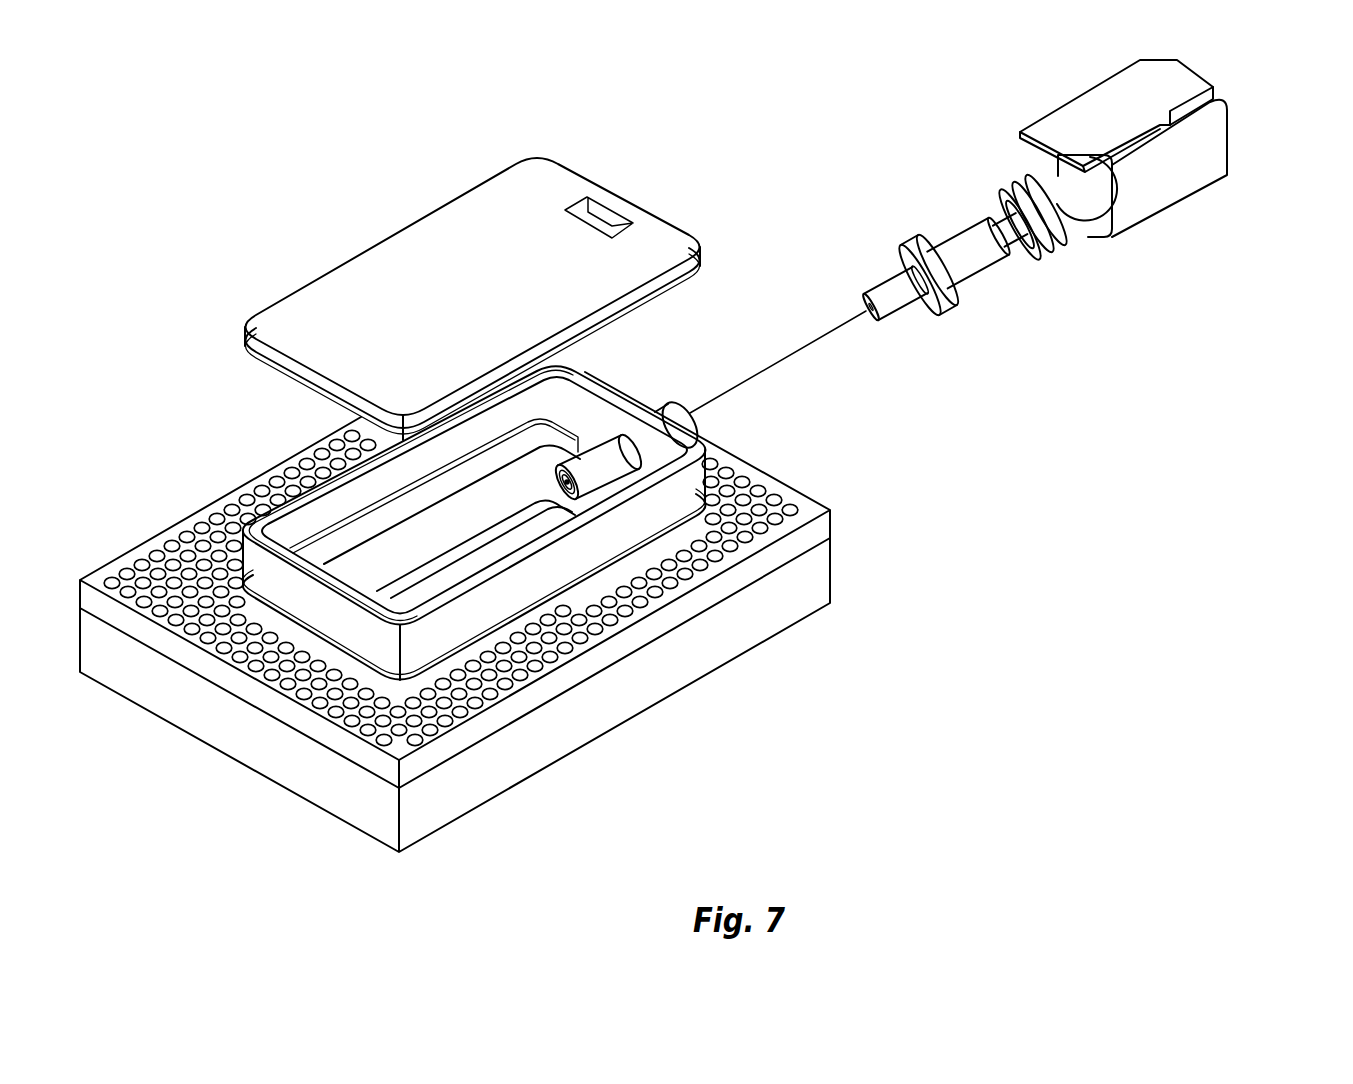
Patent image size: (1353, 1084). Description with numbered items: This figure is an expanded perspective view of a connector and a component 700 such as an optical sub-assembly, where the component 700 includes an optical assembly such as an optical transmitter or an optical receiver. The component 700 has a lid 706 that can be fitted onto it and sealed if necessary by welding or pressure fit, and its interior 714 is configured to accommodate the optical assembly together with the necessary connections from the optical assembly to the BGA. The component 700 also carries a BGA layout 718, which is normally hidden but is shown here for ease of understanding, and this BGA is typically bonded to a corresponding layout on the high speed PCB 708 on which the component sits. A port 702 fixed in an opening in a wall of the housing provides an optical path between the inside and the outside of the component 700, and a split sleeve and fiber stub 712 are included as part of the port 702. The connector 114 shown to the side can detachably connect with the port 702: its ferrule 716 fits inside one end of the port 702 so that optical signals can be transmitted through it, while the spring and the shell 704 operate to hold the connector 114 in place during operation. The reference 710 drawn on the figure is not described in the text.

The component 700 is at (526, 489).
The port 702 is at (690, 392).
The shell 704 is at (1233, 131).
The lid 706 is at (557, 185).
The PCB 708 is at (438, 793).
The septum 710 is at (566, 497).
The split sleeve and fiber stub 712 is at (620, 478).
The interior 714 is at (383, 592).
The ferrule 716 is at (899, 312).
The BGA layout 718 is at (385, 715).
The connector 114 is at (1011, 343).